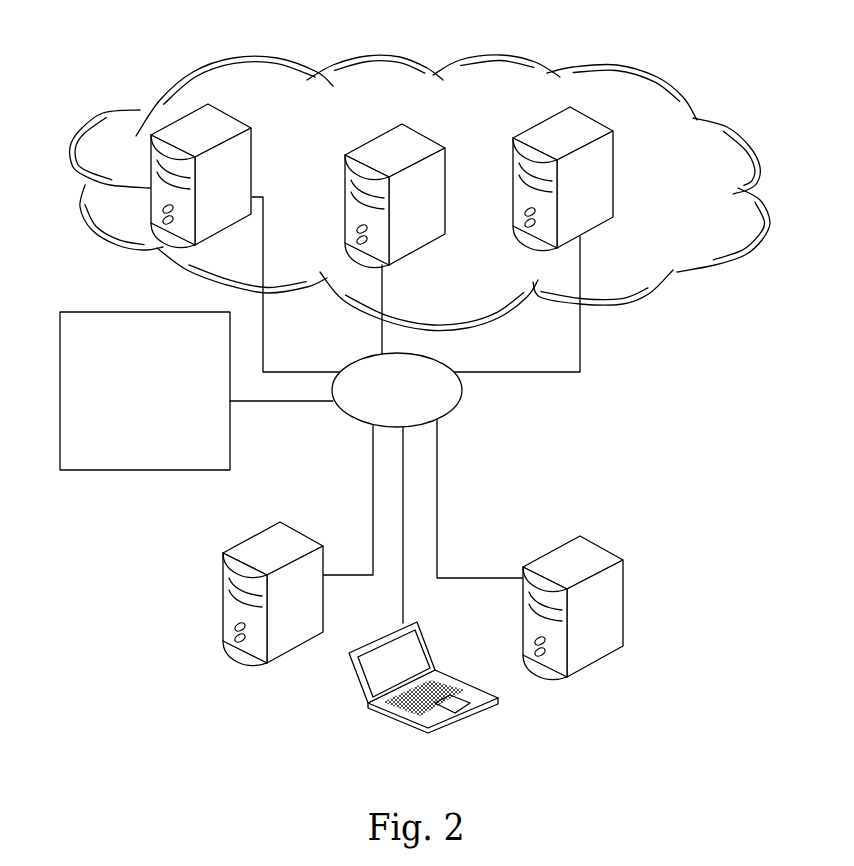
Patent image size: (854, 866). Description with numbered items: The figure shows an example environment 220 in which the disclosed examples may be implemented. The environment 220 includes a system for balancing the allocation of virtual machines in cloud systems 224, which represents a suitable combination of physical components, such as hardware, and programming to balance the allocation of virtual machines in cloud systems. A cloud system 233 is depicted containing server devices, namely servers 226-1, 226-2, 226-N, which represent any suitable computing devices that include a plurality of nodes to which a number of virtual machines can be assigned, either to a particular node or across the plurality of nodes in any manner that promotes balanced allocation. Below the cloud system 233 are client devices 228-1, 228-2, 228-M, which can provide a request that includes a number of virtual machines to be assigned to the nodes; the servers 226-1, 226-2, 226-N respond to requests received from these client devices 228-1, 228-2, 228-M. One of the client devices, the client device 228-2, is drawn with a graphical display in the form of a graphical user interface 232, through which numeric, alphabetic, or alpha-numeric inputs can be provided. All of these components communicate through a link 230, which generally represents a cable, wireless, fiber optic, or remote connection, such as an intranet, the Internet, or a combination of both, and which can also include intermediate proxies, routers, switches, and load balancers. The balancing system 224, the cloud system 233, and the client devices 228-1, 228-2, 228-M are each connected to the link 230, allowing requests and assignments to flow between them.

The environment 220 is at (155, 50).
The system for balancing the allocation of virtual machines in cloud systems 224 is at (70, 312).
The server 226-1 is at (243, 124).
The server 226-2 is at (424, 135).
The server 226-N is at (594, 120).
The client device 228-1 is at (237, 657).
The client device 228-2 is at (411, 688).
The client device 228-M is at (608, 551).
The link 230 is at (452, 369).
The graphical user interface 232 is at (373, 670).
The cloud system 233 is at (637, 303).